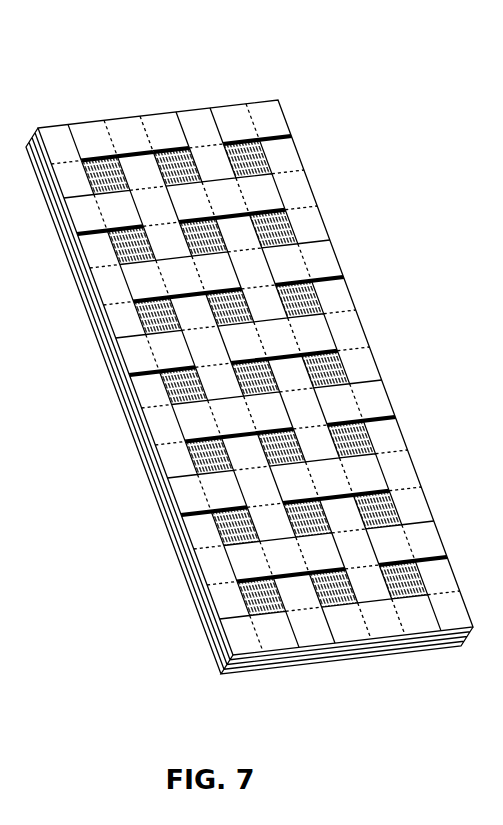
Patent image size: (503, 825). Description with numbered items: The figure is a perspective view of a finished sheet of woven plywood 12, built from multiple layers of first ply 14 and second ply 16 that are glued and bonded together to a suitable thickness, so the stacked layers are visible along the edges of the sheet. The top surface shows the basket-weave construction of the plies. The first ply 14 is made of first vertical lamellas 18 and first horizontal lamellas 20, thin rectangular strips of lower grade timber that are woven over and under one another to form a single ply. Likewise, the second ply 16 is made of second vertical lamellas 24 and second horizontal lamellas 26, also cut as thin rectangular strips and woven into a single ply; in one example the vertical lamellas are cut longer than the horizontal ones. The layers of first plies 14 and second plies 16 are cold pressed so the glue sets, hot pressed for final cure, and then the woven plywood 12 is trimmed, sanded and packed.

The woven plywood 12 is at (249, 353).
The first ply 14 is at (200, 126).
The second ply 16 is at (278, 236).
The first vertical lamellas 18 is at (277, 157).
The first horizontal lamellas 20 is at (89, 212).
The second vertical lamellas 24 is at (291, 300).
The second horizontal lamellas 26 is at (160, 130).